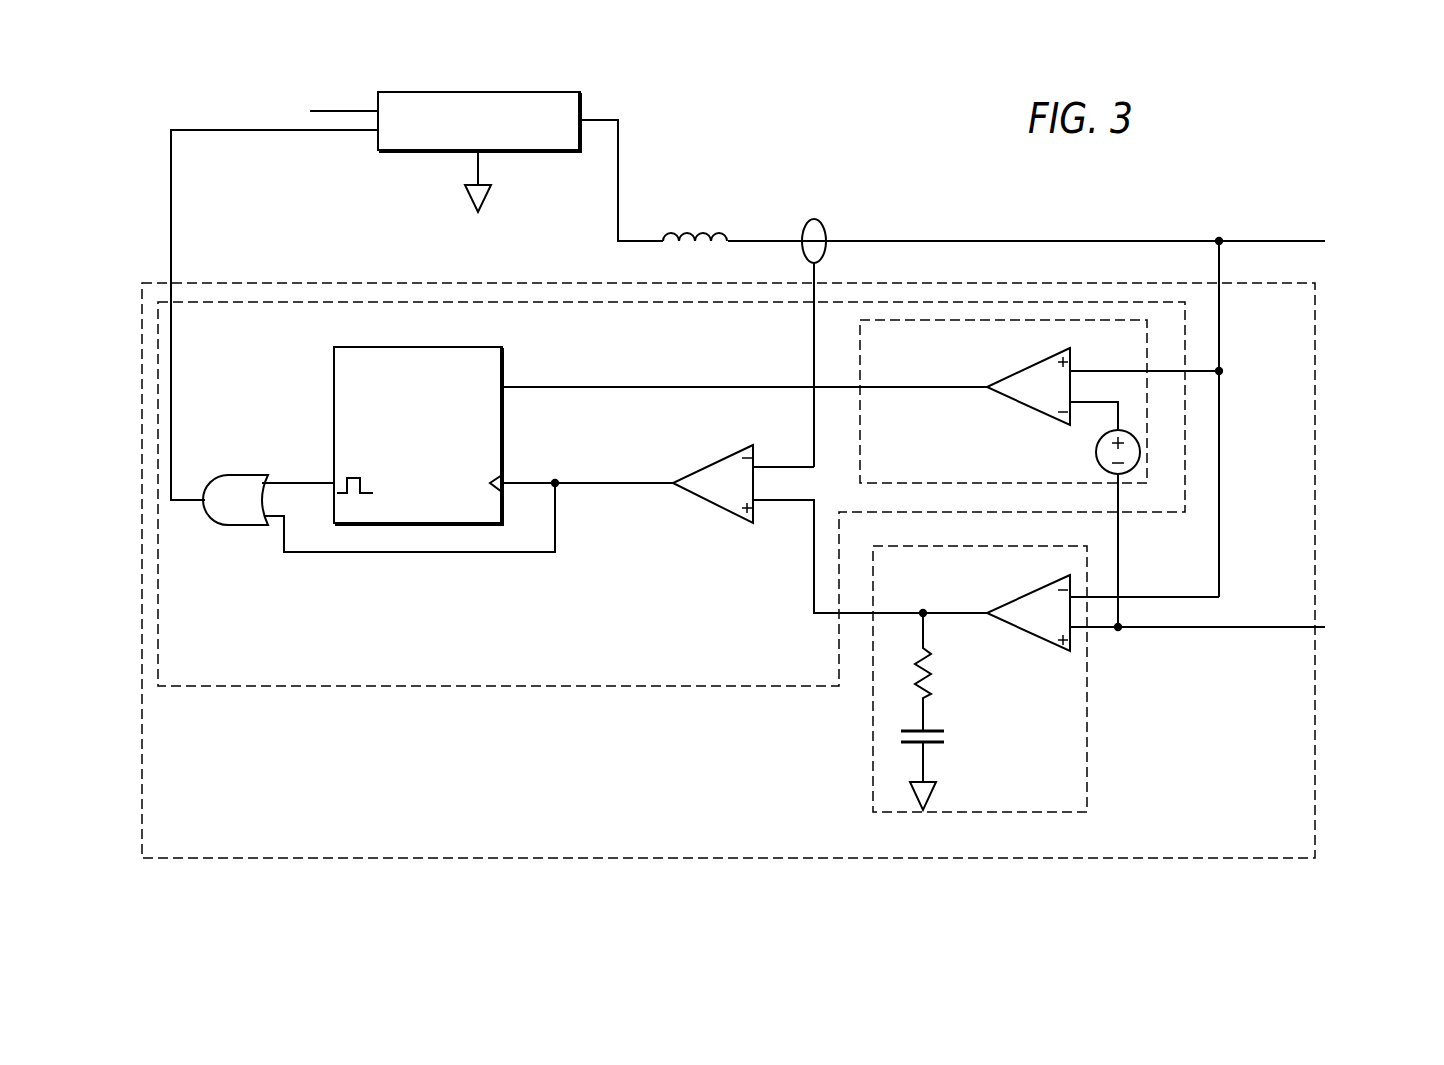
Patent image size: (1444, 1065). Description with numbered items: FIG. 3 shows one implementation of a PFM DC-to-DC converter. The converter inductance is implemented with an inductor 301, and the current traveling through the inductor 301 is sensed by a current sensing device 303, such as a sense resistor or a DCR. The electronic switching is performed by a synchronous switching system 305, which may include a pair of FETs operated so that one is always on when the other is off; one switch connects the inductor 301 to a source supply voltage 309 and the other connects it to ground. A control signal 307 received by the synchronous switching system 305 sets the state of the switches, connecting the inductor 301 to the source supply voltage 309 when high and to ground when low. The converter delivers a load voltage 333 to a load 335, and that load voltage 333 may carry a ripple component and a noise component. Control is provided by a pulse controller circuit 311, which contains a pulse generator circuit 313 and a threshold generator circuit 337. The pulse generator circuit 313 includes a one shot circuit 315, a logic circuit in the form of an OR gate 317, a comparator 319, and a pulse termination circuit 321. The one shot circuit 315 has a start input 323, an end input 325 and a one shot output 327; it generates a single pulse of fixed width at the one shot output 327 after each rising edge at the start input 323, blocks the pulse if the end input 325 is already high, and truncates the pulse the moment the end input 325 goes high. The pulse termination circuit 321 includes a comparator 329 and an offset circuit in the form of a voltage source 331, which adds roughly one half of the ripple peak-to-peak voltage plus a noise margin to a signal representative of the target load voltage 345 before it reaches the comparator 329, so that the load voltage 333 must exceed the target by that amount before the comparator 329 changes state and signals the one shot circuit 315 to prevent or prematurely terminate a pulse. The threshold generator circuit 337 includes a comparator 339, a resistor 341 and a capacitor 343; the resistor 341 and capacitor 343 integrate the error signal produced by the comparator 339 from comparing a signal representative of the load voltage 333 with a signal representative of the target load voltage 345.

The inductor 301 is at (697, 232).
The current sensing device 303 is at (824, 225).
The synchronous switching system 305 is at (545, 92).
The control signal 307 is at (346, 131).
The source supply voltage 309 is at (262, 77).
The pulse controller circuit 311 is at (288, 283).
The pulse generator circuit 313 is at (580, 686).
The one shot circuit 315 is at (334, 368).
The OR gate 317 is at (247, 475).
The comparator 319 is at (713, 462).
The pulse termination circuit 321 is at (858, 402).
The start input 323 is at (526, 483).
The end input 325 is at (527, 387).
The one shot output 327 is at (298, 483).
The comparator 329 is at (1040, 375).
The voltage source 331 is at (1096, 455).
The load voltage 333 is at (1268, 240).
The load 335 is at (1336, 232).
The threshold generator circuit 337 is at (963, 815).
The comparator 339 is at (1032, 592).
The resistor 341 is at (915, 676).
The capacitor 343 is at (900, 736).
The target load voltage 345 is at (1329, 627).